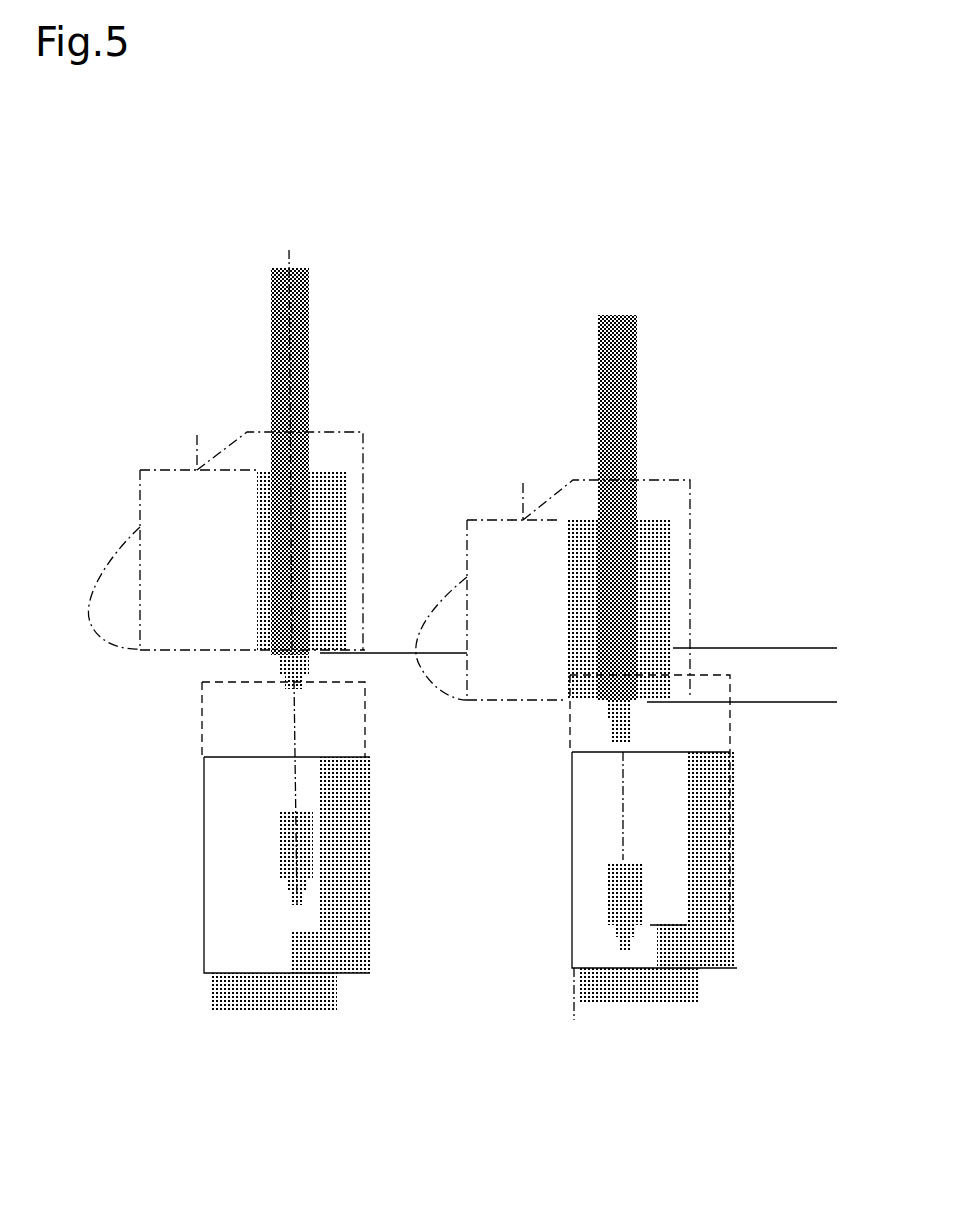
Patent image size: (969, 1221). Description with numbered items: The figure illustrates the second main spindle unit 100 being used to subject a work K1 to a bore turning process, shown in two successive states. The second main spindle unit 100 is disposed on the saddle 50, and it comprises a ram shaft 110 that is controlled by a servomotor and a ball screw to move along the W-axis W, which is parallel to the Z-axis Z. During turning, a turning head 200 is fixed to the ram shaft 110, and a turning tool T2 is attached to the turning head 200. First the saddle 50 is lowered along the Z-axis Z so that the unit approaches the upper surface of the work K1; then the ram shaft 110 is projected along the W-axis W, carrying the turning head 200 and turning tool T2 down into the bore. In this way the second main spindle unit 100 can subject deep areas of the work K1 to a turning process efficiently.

The second main spindle unit 100 is at (408, 398).
The ram shaft 110 is at (294, 366).
The saddle 50 is at (350, 468).
The turning head 200 is at (290, 678).
The turning tool T2 is at (310, 690).
The work K1 is at (353, 838).
The Z-axis Z is at (815, 473).
The W-axis W is at (820, 710).